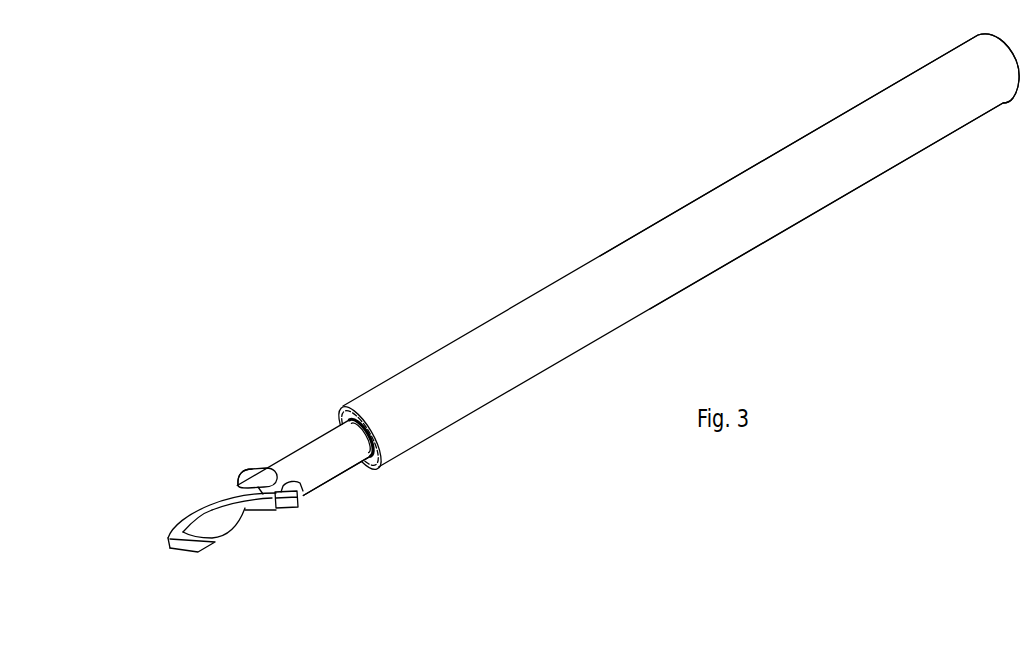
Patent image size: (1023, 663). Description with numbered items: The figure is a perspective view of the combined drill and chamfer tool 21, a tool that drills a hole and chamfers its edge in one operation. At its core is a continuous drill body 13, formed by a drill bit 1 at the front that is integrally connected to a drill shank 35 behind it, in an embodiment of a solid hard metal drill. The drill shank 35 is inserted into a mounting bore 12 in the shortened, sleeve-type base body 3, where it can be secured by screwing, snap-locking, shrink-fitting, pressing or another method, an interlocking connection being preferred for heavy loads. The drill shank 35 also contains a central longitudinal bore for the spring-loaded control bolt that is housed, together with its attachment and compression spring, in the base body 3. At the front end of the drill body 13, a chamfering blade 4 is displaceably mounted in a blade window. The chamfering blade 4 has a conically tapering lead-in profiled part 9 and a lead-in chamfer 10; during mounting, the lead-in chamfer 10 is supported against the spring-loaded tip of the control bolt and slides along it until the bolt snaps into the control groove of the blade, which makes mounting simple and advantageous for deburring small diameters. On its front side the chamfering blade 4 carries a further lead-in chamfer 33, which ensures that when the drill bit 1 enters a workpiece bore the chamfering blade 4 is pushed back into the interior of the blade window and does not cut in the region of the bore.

The drill bit 1 is at (207, 486).
The base body 3 is at (460, 324).
The chamfering blade 4 is at (312, 514).
The lead-in profiled part 9 is at (241, 455).
The lead-in chamfer 10 is at (257, 455).
The mounting bore 12 is at (392, 440).
The drill body 13 is at (308, 404).
The combined drill and chamfer tool 21 is at (550, 125).
The lead-in chamfer 33 is at (281, 521).
The drill shank 35 is at (338, 465).